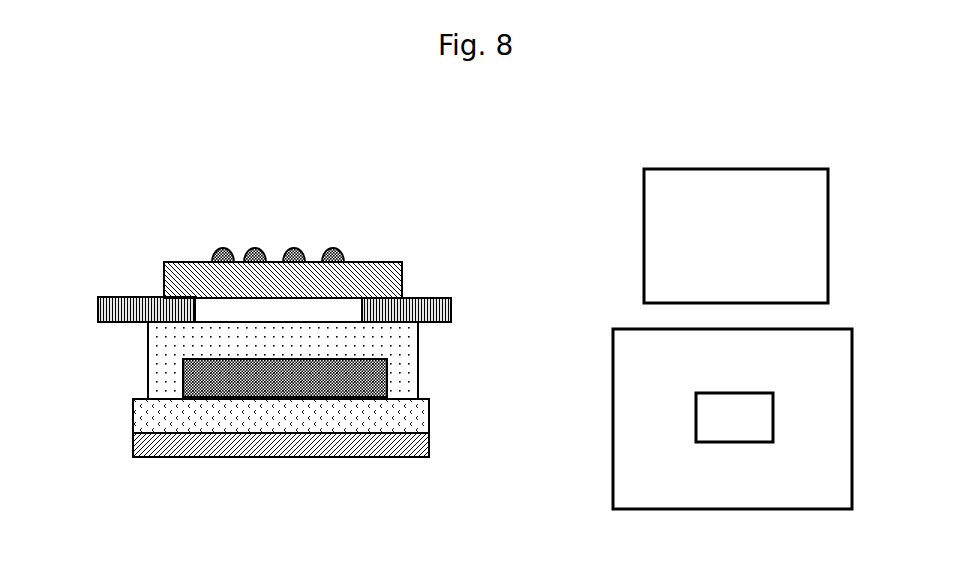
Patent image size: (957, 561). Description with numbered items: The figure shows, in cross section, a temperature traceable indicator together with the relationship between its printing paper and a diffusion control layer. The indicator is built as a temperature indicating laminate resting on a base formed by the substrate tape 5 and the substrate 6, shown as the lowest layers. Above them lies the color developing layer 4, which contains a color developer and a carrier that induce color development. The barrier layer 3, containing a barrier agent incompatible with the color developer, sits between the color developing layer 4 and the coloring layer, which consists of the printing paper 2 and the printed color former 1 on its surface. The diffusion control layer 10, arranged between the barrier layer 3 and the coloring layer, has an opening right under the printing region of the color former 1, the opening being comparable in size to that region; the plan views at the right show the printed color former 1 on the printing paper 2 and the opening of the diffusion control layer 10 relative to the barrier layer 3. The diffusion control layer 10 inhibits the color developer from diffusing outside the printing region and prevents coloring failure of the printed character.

The color former 1 is at (218, 246).
The printing paper 2 is at (658, 249).
The barrier layer 3 is at (148, 326).
The color developing layer 4 is at (378, 376).
The substrate tape 5 is at (150, 417).
The substrate 6 is at (430, 437).
The diffusion control layer 10 is at (627, 368).